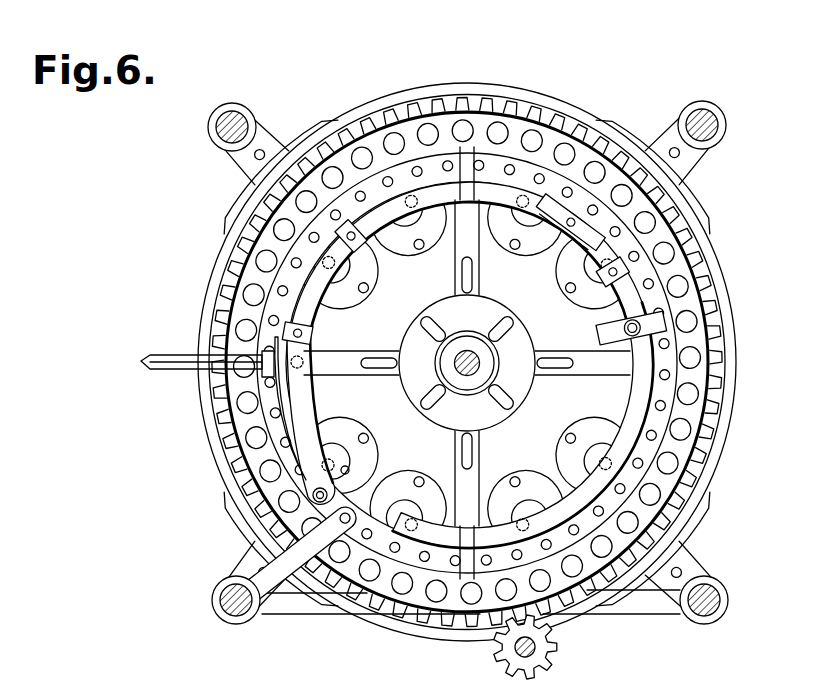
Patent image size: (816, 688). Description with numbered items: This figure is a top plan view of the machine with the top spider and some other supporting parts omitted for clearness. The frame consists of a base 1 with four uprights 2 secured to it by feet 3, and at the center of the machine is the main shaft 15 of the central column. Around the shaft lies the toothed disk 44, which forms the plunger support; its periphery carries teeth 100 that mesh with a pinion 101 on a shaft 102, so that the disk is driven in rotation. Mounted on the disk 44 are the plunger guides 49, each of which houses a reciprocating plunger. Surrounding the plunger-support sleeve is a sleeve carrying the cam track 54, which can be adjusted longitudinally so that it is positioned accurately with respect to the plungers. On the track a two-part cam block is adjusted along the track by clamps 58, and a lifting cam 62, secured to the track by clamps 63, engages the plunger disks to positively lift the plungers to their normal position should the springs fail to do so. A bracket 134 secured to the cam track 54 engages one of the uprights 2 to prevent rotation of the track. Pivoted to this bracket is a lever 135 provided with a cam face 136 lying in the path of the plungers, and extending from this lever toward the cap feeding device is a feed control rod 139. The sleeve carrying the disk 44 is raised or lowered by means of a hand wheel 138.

The base 1 is at (520, 101).
The uprights 2 is at (235, 117).
The feet 3 is at (263, 148).
The main shaft 15 is at (467, 352).
The toothed disk 44 is at (470, 365).
The plunger guides 49 is at (410, 478).
The track 54 is at (336, 432).
The clamps 58 is at (316, 331).
The lifting cam 62 is at (592, 309).
The clamps 63 is at (553, 243).
The teeth 100 is at (440, 106).
The pinion 101 is at (556, 653).
The shaft 102 is at (512, 651).
The bracket 134 is at (292, 546).
The lever 135 is at (296, 441).
The cam face 136 is at (280, 373).
The hand wheel 138 is at (516, 401).
The feed control rod 139 is at (190, 357).